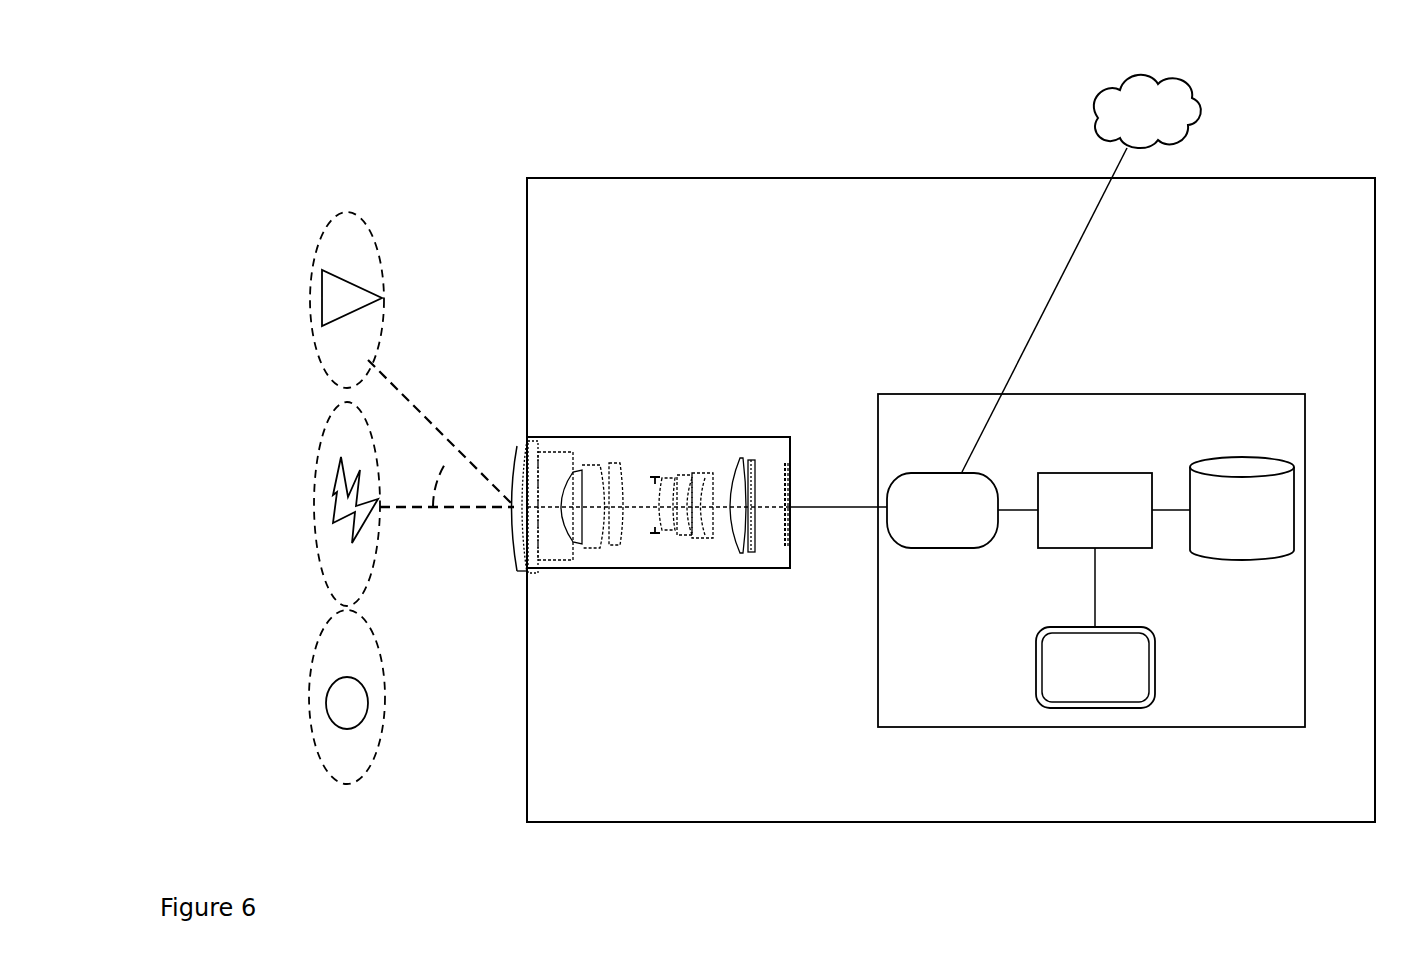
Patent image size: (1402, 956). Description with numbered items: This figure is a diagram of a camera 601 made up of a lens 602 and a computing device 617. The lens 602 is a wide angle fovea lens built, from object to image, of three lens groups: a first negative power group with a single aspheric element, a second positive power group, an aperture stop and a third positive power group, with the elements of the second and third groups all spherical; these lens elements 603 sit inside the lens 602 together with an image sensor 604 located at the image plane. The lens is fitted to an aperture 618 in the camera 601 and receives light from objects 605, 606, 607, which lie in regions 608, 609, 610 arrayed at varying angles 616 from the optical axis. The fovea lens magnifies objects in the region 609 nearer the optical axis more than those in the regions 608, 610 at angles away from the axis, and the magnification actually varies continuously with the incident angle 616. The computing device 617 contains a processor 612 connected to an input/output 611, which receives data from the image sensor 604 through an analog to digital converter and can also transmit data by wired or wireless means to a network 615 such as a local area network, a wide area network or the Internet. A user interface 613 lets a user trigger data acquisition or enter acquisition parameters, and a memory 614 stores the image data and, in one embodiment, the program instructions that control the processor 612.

The camera 601 is at (871, 881).
The lens 602 is at (659, 631).
The lens elements 603 is at (592, 478).
The image sensor 604 is at (777, 462).
The object 605 is at (341, 496).
The object 606 is at (352, 278).
The object 607 is at (361, 731).
The region 608 is at (394, 258).
The region 609 is at (381, 533).
The region 610 is at (393, 664).
The input/output 611 is at (920, 499).
The processor 612 is at (1093, 522).
The user interface 613 is at (1098, 686).
The memory 614 is at (1245, 516).
The network 615 is at (1134, 112).
The incident angle 616 is at (448, 465).
The computing device 617 is at (1056, 793).
The aperture 618 is at (517, 436).